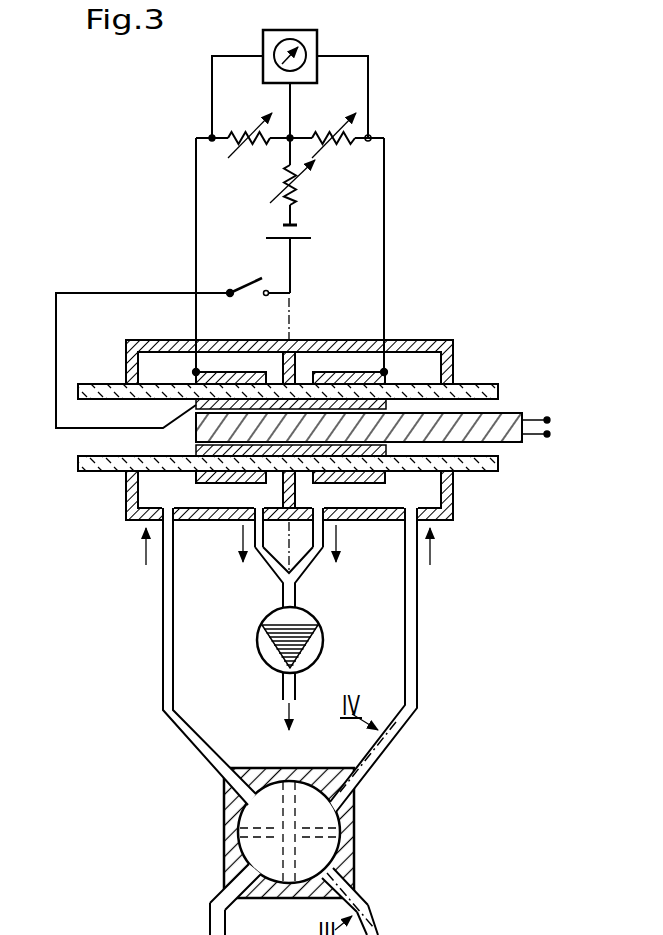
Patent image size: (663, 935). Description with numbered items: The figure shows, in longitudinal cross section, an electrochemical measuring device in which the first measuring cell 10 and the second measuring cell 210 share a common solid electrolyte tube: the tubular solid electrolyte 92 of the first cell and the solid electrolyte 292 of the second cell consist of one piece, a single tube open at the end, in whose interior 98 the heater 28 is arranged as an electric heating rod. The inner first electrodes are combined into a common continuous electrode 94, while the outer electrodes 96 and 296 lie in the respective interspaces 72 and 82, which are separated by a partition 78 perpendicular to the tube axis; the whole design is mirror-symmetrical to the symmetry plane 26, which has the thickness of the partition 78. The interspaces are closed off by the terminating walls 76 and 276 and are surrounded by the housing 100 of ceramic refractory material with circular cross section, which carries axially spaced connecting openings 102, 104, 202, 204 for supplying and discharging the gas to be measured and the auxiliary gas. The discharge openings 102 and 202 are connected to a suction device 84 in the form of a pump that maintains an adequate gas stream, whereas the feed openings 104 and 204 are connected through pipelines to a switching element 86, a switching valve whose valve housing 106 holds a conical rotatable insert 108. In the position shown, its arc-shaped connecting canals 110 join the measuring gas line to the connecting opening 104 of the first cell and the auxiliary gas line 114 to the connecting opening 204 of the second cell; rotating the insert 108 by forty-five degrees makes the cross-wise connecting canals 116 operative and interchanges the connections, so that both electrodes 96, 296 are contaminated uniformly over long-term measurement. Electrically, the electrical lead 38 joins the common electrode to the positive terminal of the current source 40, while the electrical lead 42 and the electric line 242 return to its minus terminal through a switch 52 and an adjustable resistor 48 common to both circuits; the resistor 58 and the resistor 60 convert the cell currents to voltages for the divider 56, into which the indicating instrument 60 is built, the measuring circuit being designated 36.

The first measuring cell 10 is at (456, 478).
The symmetry plane 26 is at (296, 554).
The heater 28 is at (503, 413).
The measuring circuit 36 is at (543, 302).
The electrical lead 38 is at (115, 292).
The current source 40 is at (281, 230).
The electrical lead 42 is at (386, 172).
The adjustable resistor 48 is at (306, 188).
The switch 52 is at (252, 284).
The divider 56 is at (317, 43).
The electric resistor 58 is at (320, 134).
The indicating instrument 60 is at (277, 47).
The interspace 72 is at (417, 362).
The terminating wall 76 is at (455, 357).
The partition 78 is at (295, 362).
The second interspace 82 is at (155, 372).
The suction device 84 is at (325, 642).
The switching element 86 is at (224, 798).
The tubular solid electrolyte 92 is at (485, 383).
The common continuous electrode 94 is at (195, 403).
The outer electrode 96 is at (348, 371).
The interior 98 is at (92, 443).
The housing 100 is at (436, 341).
The connecting opening 102 is at (320, 513).
The connecting opening 104 is at (410, 517).
The valve housing 106 is at (303, 890).
The rotatable insert 108 is at (275, 868).
The connecting canals 110 is at (258, 848).
The auxiliary gas line 114 is at (208, 917).
The connecting canals 116 is at (290, 805).
The connecting opening 202 is at (257, 518).
The connecting opening 204 is at (168, 517).
The second measuring cell 210 is at (108, 473).
The electric line 242 is at (195, 172).
The terminating wall 276 is at (125, 345).
The solid electrolyte 292 is at (78, 393).
The outer electrode 296 is at (233, 371).